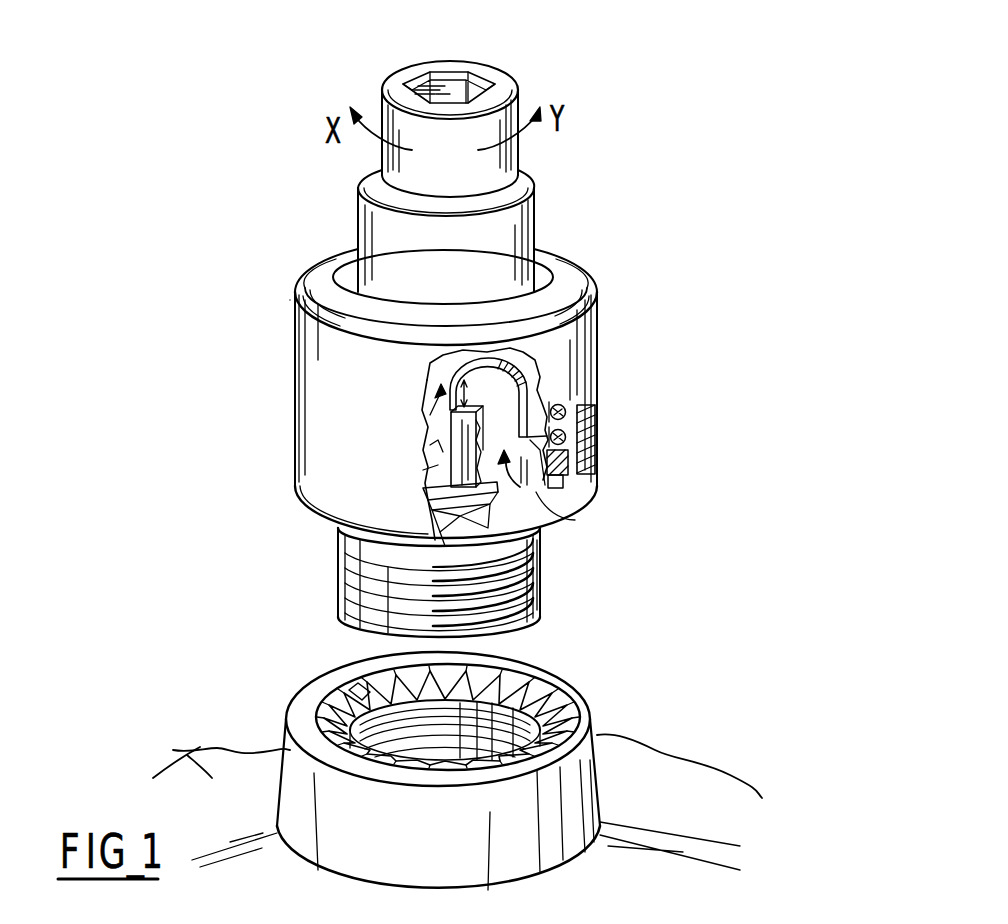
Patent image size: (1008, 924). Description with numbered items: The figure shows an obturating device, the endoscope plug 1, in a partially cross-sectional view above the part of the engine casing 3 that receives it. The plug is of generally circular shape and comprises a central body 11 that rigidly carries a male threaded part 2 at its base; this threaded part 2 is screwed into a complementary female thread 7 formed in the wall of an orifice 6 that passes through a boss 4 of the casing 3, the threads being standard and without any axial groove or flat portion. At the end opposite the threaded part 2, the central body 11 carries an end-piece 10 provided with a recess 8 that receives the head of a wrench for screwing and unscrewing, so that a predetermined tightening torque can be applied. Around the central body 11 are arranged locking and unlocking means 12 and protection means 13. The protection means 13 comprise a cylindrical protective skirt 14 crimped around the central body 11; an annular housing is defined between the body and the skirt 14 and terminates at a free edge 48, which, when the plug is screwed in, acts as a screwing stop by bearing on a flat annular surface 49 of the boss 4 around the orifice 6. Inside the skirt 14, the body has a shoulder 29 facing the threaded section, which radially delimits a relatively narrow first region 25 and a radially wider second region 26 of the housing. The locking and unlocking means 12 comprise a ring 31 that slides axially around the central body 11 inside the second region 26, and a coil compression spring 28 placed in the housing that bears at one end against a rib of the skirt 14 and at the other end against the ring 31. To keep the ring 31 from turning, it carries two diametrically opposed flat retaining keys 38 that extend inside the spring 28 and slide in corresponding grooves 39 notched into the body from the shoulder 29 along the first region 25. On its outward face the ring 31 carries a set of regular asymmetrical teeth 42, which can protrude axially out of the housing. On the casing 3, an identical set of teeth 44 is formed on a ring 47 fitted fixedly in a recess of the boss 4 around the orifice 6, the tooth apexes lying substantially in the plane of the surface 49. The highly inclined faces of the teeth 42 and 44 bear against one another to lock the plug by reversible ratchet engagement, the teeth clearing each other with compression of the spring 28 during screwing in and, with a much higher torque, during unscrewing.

The endoscope plug 1 is at (552, 199).
The threaded part 2 is at (390, 578).
The engine casing 3 is at (173, 750).
The boss 4 is at (305, 775).
The orifice 6 is at (570, 688).
The female thread 7 is at (598, 723).
The recess 8 is at (462, 90).
The end-piece 10 is at (400, 248).
The central body 11 is at (536, 492).
The locking and unlocking means 12 is at (592, 420).
The protection means 13 is at (290, 355).
The protective skirt 14 is at (590, 402).
The first region 25 is at (430, 413).
The second region 26 is at (538, 548).
The coil compression spring 28 is at (578, 428).
The shoulder 29 is at (428, 469).
The ring 31 is at (562, 497).
The retaining keys 38 is at (450, 436).
The grooves 39 is at (502, 378).
The set of teeth 42 is at (345, 537).
The set of teeth 44 is at (456, 736).
The ring 47 is at (348, 688).
The free edge 48 is at (585, 470).
The flat annular surface 49 is at (572, 696).